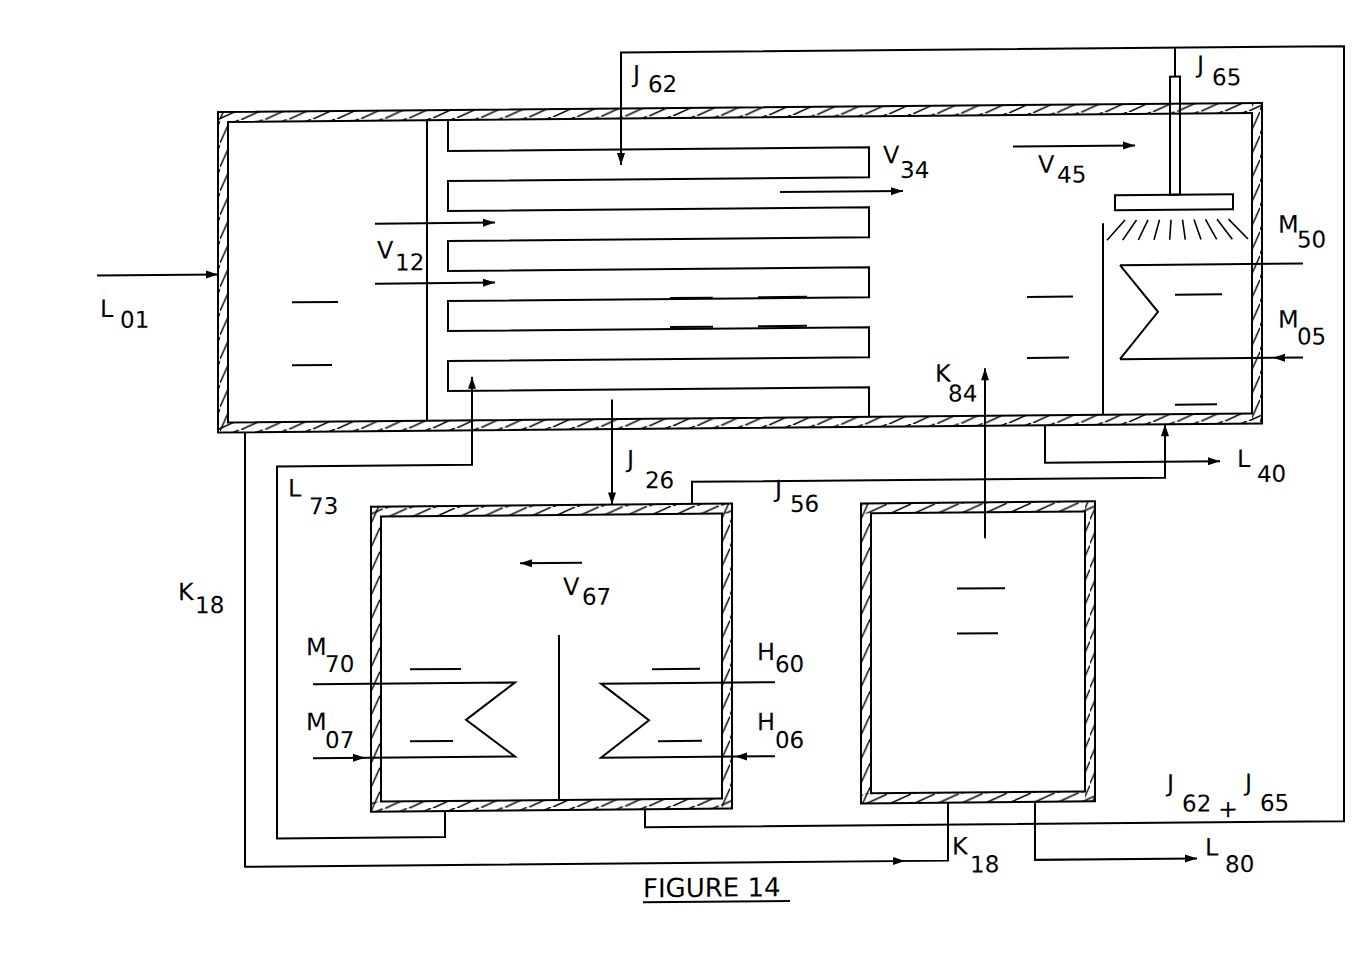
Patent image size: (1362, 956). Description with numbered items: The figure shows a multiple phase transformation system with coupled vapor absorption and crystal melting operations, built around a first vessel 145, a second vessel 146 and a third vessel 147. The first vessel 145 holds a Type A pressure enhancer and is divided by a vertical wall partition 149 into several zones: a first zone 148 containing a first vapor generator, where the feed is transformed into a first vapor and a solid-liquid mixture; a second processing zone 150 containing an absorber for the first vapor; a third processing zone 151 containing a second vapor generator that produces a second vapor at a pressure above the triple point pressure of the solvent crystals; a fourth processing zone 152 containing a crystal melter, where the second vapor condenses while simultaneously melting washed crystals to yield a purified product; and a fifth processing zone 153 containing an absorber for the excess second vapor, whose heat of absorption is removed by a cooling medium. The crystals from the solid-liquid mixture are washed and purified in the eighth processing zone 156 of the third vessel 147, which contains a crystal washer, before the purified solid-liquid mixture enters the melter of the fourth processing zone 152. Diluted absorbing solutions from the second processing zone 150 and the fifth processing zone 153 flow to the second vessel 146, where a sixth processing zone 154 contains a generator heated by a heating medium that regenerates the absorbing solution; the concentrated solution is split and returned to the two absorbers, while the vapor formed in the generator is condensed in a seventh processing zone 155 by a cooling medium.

The first vessel 145 is at (297, 101).
The second vessel 146 is at (360, 599).
The third vessel 147 is at (1108, 601).
The first zone 148 is at (359, 271).
The vertical wall partition 149 is at (878, 281).
The second processing zone 150 is at (738, 284).
The third processing zone 151 is at (738, 313).
The fourth processing zone 152 is at (1065, 319).
The fifth processing zone 153 is at (1205, 241).
The sixth processing zone 154 is at (688, 698).
The seventh processing zone 155 is at (414, 698).
The zone Z-8 chamber 156 is at (981, 597).